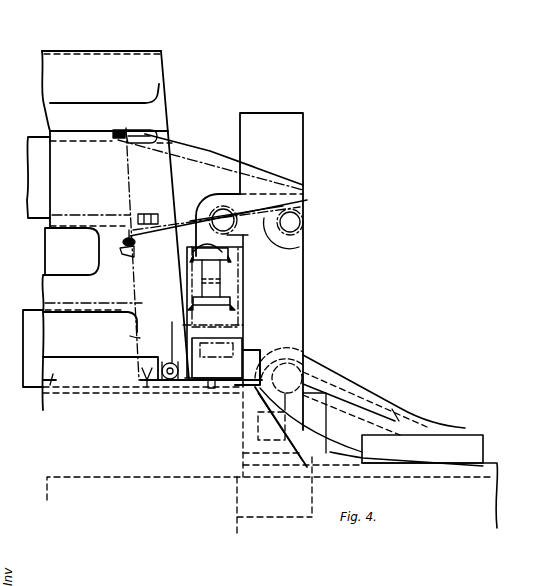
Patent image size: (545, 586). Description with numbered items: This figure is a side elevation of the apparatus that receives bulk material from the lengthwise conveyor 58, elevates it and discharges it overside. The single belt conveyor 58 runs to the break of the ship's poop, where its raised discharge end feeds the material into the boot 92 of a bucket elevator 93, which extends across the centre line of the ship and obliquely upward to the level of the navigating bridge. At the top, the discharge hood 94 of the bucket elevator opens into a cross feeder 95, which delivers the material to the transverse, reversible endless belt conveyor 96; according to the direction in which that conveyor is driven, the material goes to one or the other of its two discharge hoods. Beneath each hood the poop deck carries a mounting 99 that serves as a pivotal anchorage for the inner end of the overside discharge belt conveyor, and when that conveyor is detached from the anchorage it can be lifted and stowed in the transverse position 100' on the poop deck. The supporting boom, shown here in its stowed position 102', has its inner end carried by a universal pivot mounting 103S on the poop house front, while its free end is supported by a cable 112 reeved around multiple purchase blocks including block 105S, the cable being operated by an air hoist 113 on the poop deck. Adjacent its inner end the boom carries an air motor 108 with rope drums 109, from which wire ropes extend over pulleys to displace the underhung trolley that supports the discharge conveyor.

The lengthwise conveyor 58 is at (330, 372).
The boot 92 is at (274, 497).
The bucket elevator 93 is at (232, 311).
The discharge hood 94 is at (250, 178).
The cross feeder 95 is at (243, 236).
The transverse reversible endless belt conveyor 96 is at (225, 298).
The mounting 99 is at (212, 388).
The transverse stowage position of overside discharge conveyor 100' is at (259, 390).
The stowed position of boom 102' is at (302, 234).
The universal pivot mounting 103S is at (127, 238).
The multiple purchase block 105S is at (146, 130).
The vertical rod 108 is at (127, 208).
The rope drums 109 is at (148, 210).
The cable 112 is at (198, 141).
The roller 113 is at (163, 358).